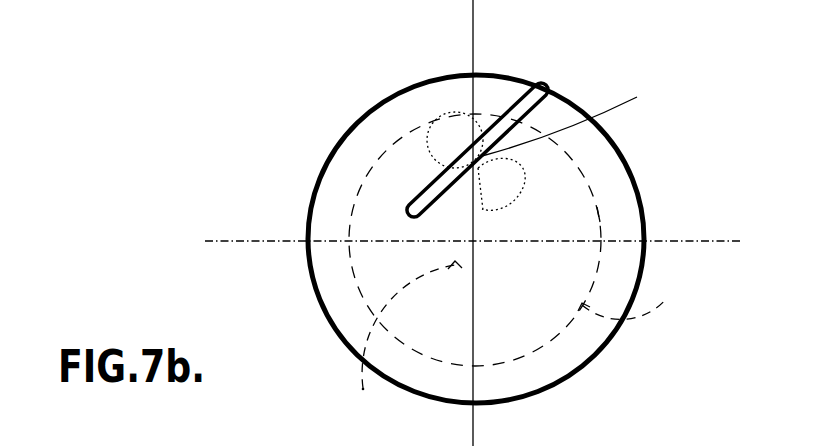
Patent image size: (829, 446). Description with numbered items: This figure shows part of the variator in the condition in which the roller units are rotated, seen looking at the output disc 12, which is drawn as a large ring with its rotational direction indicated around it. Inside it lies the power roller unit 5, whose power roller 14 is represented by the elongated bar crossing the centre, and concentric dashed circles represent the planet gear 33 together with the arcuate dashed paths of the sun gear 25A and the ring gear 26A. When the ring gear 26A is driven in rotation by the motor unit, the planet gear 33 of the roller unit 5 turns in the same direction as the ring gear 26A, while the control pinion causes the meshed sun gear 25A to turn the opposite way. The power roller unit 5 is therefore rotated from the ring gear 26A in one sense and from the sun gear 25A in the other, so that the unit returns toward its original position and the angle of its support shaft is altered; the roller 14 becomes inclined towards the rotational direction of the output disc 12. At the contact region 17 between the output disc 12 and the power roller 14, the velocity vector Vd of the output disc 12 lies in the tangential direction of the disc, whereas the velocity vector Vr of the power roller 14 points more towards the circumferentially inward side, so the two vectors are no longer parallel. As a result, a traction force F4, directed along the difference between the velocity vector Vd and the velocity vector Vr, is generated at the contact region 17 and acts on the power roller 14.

The power roller unit 5 is at (306, 138).
The output disc 12 is at (328, 262).
The power roller 14 is at (550, 102).
The contact region 17 is at (575, 113).
The planet gear 33 is at (645, 198).
The sun gear 25A is at (401, 343).
The ring gear 26A is at (642, 292).
The velocity vector of the output disc Vd is at (472, 100).
The velocity vector of the power roller Vr is at (478, 150).
The traction force F4 is at (445, 158).